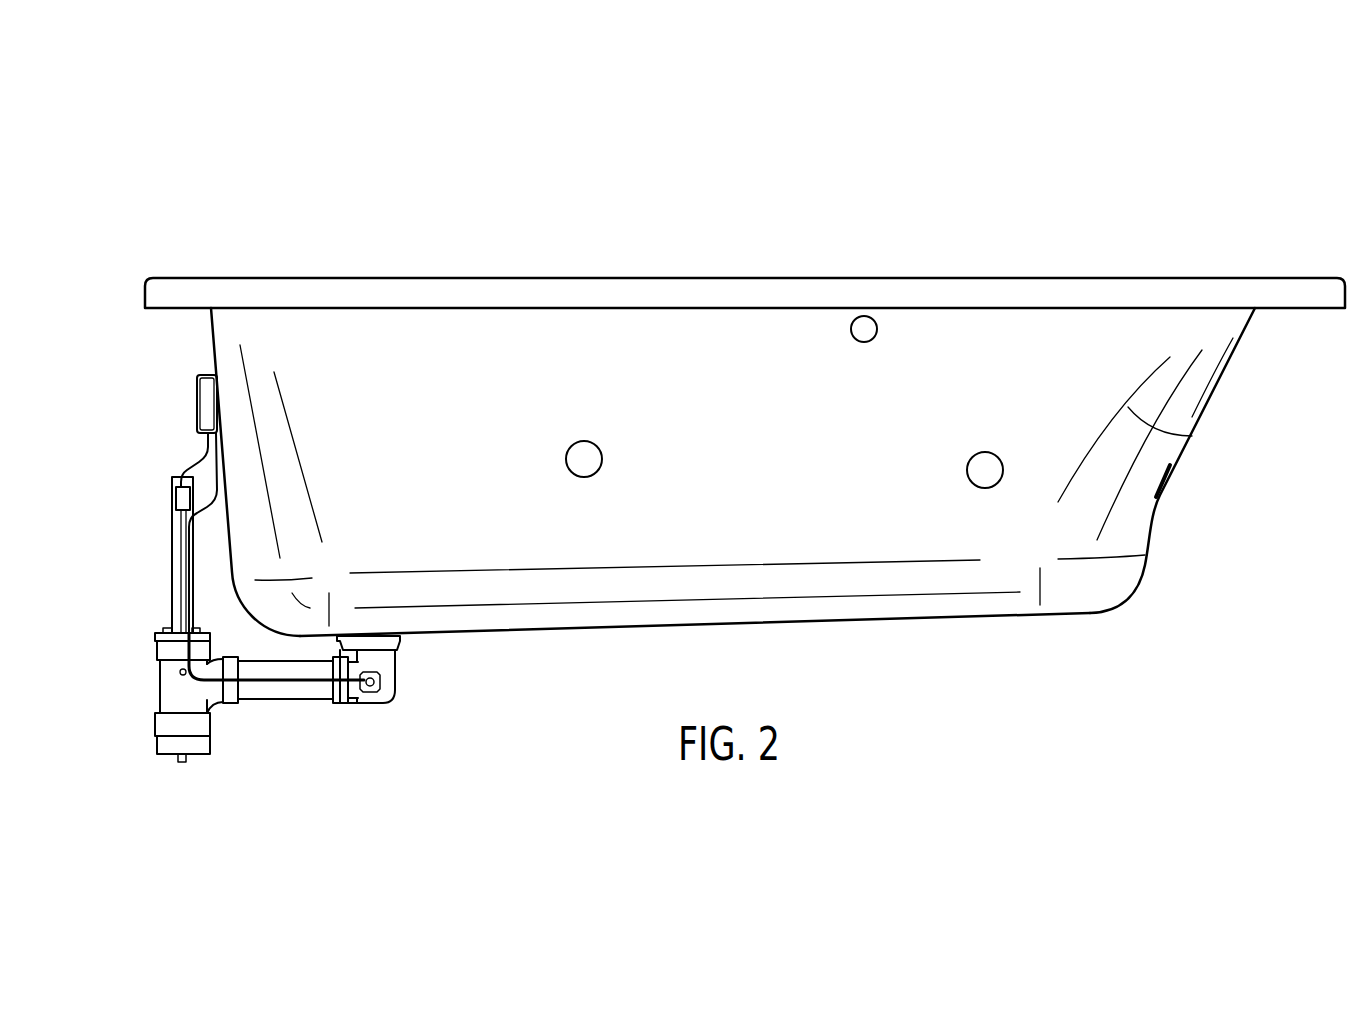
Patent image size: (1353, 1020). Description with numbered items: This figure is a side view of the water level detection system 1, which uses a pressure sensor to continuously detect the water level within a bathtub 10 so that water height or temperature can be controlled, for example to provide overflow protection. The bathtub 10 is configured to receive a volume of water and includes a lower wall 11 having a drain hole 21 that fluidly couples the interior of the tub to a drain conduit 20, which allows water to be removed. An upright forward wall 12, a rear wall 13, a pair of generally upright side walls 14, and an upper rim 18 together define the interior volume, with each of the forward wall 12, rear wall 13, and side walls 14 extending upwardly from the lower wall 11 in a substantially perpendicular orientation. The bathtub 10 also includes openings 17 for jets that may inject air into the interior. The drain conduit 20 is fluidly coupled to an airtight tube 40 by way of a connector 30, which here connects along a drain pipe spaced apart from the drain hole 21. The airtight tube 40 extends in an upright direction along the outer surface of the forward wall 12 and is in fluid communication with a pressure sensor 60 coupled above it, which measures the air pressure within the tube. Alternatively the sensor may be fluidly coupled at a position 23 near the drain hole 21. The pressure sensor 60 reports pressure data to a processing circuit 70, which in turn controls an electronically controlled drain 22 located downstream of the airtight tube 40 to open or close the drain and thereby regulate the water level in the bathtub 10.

The water level detection system 1 is at (1197, 190).
The bathtub 10 is at (705, 444).
The lower wall 11 is at (650, 629).
The forward wall 12 is at (208, 344).
The rear wall 13 is at (1197, 422).
The side walls 14 is at (760, 485).
The openings for jets 17 is at (571, 476).
The upper rim 18 is at (533, 290).
The drain conduit 20 is at (297, 692).
The drain hole 21 is at (357, 640).
The electronically controlled drain 22 is at (186, 760).
The position near the drain hole 23 is at (376, 686).
The connector 30 is at (172, 691).
The airtight tube 40 is at (182, 538).
The pressure sensor 60 is at (180, 485).
The processing circuit 70 is at (207, 403).